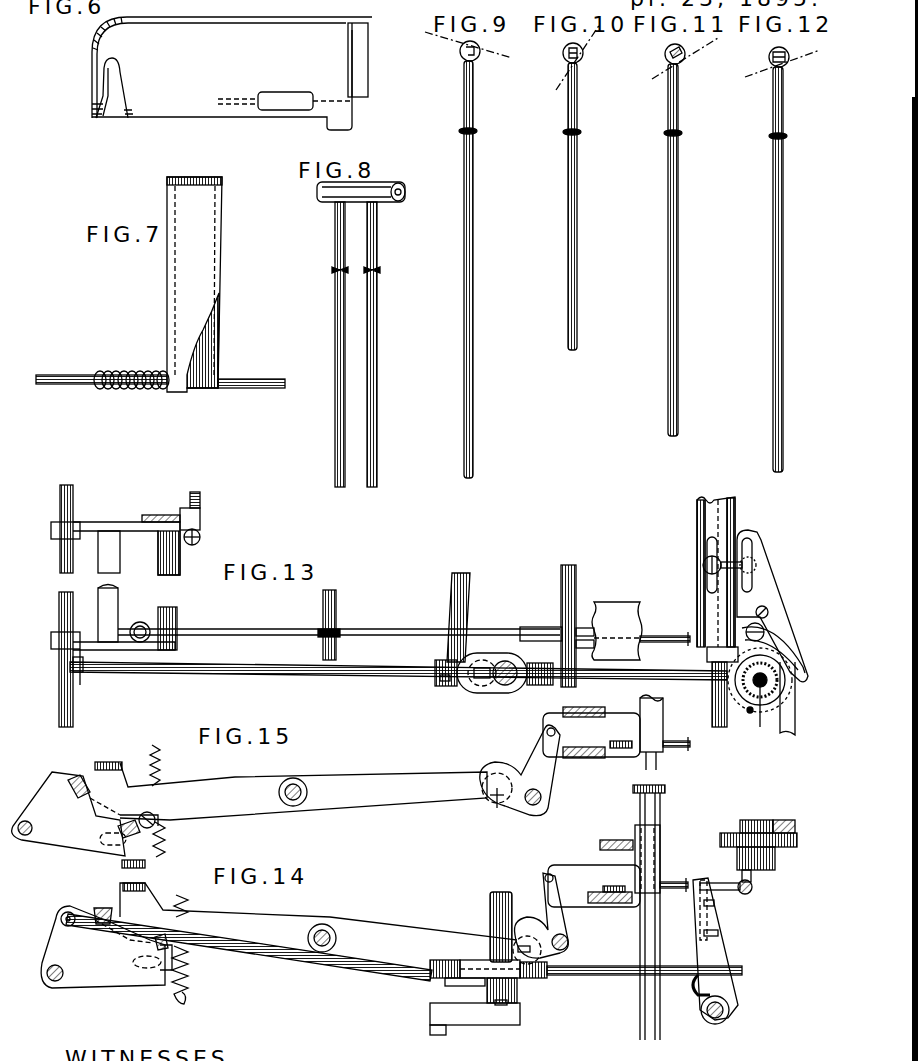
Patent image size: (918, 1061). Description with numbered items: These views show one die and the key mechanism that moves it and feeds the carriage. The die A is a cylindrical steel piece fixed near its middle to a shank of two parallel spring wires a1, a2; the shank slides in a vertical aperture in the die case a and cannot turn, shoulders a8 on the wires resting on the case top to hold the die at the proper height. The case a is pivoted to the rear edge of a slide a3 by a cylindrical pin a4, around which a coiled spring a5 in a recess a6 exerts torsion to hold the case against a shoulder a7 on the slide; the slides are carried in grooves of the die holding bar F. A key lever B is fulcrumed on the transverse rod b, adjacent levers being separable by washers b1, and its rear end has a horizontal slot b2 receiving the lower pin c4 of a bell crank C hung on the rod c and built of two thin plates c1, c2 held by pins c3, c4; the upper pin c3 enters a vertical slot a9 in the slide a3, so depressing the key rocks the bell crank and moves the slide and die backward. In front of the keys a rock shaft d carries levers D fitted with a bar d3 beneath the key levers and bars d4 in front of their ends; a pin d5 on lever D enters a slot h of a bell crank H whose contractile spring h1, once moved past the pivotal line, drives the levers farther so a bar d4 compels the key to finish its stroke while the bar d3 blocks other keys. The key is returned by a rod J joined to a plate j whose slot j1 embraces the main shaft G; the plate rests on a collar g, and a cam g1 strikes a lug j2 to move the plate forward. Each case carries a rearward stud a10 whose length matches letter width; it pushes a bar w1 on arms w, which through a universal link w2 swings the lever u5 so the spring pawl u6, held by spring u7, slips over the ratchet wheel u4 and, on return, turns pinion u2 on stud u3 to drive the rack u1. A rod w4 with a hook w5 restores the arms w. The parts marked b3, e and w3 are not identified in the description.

In FIG. 7, the die case a is at (194, 284).
In FIG. 15, the die case a is at (651, 732).
In FIG. 14, the die case a is at (647, 859).
In FIG. 8, the spring wire a1 is at (335, 249).
In FIG. 8, the spring wire a2 is at (377, 232).
In FIG. 9, the spring wire a2 is at (472, 176).
In FIG. 10, the spring wire a2 is at (575, 176).
In FIG. 11, the spring wire a2 is at (677, 177).
In FIG. 12, the spring wire a2 is at (781, 177).
In FIG. 6, the slide a3 is at (232, 73).
In FIG. 15, the slide a3 is at (591, 735).
In FIG. 14, the slide a3 is at (594, 885).
In FIG. 7, the cylindrical pin a4 is at (70, 376).
In FIG. 7, the coiled spring a5 is at (146, 372).
In FIG. 6, the recess a6 is at (300, 93).
In FIG. 6, the shoulder a7 is at (360, 50).
In FIG. 8, the shoulder a8 is at (368, 275).
In FIG. 9, the shoulder a8 is at (468, 131).
In FIG. 10, the shoulder a8 is at (581, 132).
In FIG. 11, the shoulder a8 is at (665, 133).
In FIG. 12, the shoulder a8 is at (778, 136).
In FIG. 6, the vertical slot a9 is at (112, 72).
In FIG. 7, the stud a10 is at (268, 379).
In FIG. 13, the stud a10 is at (682, 644).
In FIG. 15, the stud a10 is at (683, 746).
In FIG. 14, the stud a10 is at (674, 879).
In FIG. 8, the die A is at (380, 199).
In FIG. 9, the die A is at (475, 60).
In FIG. 10, the die A is at (578, 61).
In FIG. 11, the die A is at (681, 61).
In FIG. 12, the die A is at (785, 64).
In FIG. 14, the die A is at (660, 791).
In FIG. 13, the key lever B is at (410, 629).
In FIG. 15, the key lever B is at (303, 791).
In FIG. 14, the key lever B is at (318, 917).
In FIG. 13, the transverse cylindrical rod b is at (326, 598).
In FIG. 15, the transverse cylindrical rod b is at (307, 792).
In FIG. 14, the transverse cylindrical rod b is at (332, 943).
In FIG. 13, the washer b1 is at (338, 629).
In FIG. 15, the washer b1 is at (279, 790).
In FIG. 14, the washer b1 is at (308, 934).
In FIG. 15, the horizontal slot b2 is at (492, 784).
In FIG. 14, the horizontal slot b2 is at (527, 950).
In FIG. 13, the stop block b3 is at (140, 624).
In FIG. 15, the stop block b3 is at (104, 762).
In FIG. 14, the stop block b3 is at (134, 873).
In FIG. 13, the bell crank lever C is at (556, 627).
In FIG. 15, the bell crank lever C is at (520, 770).
In FIG. 14, the bell crank lever C is at (542, 915).
In FIG. 15, the cylindrical rod c is at (542, 797).
In FIG. 14, the cylindrical rod c is at (569, 942).
In FIG. 13, the thin plate c1 is at (582, 628).
In FIG. 13, the thin plate c2 is at (583, 648).
In FIG. 15, the pin c3 is at (551, 732).
In FIG. 14, the pin c3 is at (545, 878).
In FIG. 15, the pin c4 is at (492, 808).
In FIG. 13, the lever D is at (128, 528).
In FIG. 15, the lever D is at (68, 814).
In FIG. 14, the lever D is at (103, 947).
In FIG. 13, the rock shaft d is at (62, 600).
In FIG. 15, the rock shaft d is at (32, 828).
In FIG. 14, the rock shaft d is at (63, 973).
In FIG. 13, the bar d3 is at (172, 568).
In FIG. 15, the bar d3 is at (134, 838).
In FIG. 14, the bar d3 is at (162, 938).
In FIG. 13, the bar d4 is at (111, 558).
In FIG. 15, the bar d4 is at (80, 780).
In FIG. 14, the bar d4 is at (103, 895).
In FIG. 13, the pin d5 is at (152, 514).
In FIG. 13, the upright e is at (576, 586).
In FIG. 13, the die holding bar F is at (617, 631).
In FIG. 15, the die holding bar F is at (594, 708).
In FIG. 14, the die holding bar F is at (620, 841).
In FIG. 13, the main shaft G is at (518, 688).
In FIG. 14, the main shaft G is at (491, 912).
In FIG. 13, the collar g is at (508, 660).
In FIG. 14, the collar g is at (517, 985).
In FIG. 13, the cam g1 is at (483, 660).
In FIG. 14, the cam g1 is at (470, 987).
In FIG. 13, the bell crank lever H is at (182, 513).
In FIG. 15, the bell crank lever H is at (140, 815).
In FIG. 14, the bell crank lever H is at (163, 972).
In FIG. 15, the slot h is at (108, 840).
In FIG. 14, the slot h is at (133, 963).
In FIG. 13, the contractile coil spring h1 is at (200, 538).
In FIG. 15, the contractile coil spring h1 is at (155, 746).
In FIG. 14, the contractile coil spring h1 is at (186, 906).
In FIG. 13, the rod J is at (355, 673).
In FIG. 14, the rod J is at (353, 968).
In FIG. 13, the plate j is at (443, 686).
In FIG. 14, the plate j is at (480, 960).
In FIG. 13, the slot j1 is at (495, 690).
In FIG. 13, the lug j2 is at (470, 690).
In FIG. 14, the lug j2 is at (458, 962).
In FIG. 13, the rack u1 is at (788, 733).
In FIG. 14, the rack u1 is at (788, 820).
In FIG. 14, the pinion u2 is at (752, 822).
In FIG. 13, the vertical stud u3 is at (762, 713).
In FIG. 13, the ratchet wheel u4 is at (736, 683).
In FIG. 14, the ratchet wheel u4 is at (721, 839).
In FIG. 13, the lever u5 is at (756, 584).
In FIG. 14, the lever u5 is at (768, 865).
In FIG. 13, the spring pawl u6 is at (772, 633).
In FIG. 13, the spring u7 is at (745, 620).
In FIG. 13, the arm w is at (717, 612).
In FIG. 14, the arm w is at (712, 950).
In FIG. 14, the bar w1 is at (696, 905).
In FIG. 13, the universal link w2 is at (703, 563).
In FIG. 14, the universal link w2 is at (730, 892).
In FIG. 13, the pin w3 is at (749, 714).
In FIG. 14, the rod w4 is at (597, 976).
In FIG. 14, the hook w5 is at (698, 988).